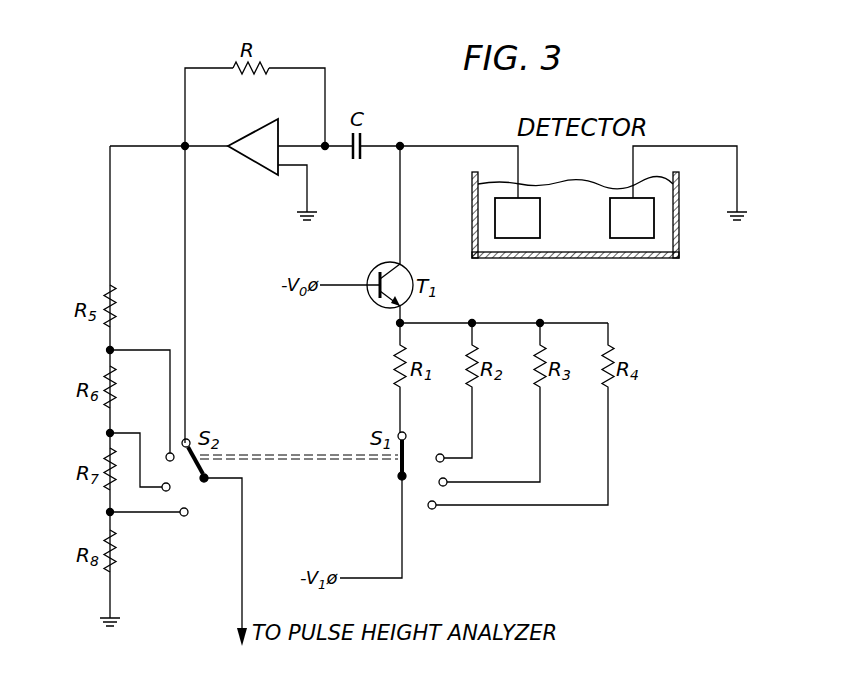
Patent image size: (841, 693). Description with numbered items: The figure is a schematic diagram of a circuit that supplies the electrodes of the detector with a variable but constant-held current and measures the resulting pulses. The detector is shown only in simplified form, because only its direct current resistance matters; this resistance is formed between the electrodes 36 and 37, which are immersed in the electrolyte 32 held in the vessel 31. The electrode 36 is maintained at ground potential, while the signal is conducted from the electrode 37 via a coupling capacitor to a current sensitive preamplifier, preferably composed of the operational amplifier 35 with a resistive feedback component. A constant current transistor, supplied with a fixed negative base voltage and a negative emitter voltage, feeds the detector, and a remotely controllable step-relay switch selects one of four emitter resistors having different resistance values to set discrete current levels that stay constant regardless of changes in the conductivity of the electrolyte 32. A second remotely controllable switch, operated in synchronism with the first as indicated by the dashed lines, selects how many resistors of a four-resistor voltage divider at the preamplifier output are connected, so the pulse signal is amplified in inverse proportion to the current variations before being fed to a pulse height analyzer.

The vessel 31 is at (606, 257).
The electrolyte 32 is at (566, 246).
The operational amplifier 35 is at (254, 139).
The electrode 36 is at (645, 230).
The electrode 37 is at (517, 232).